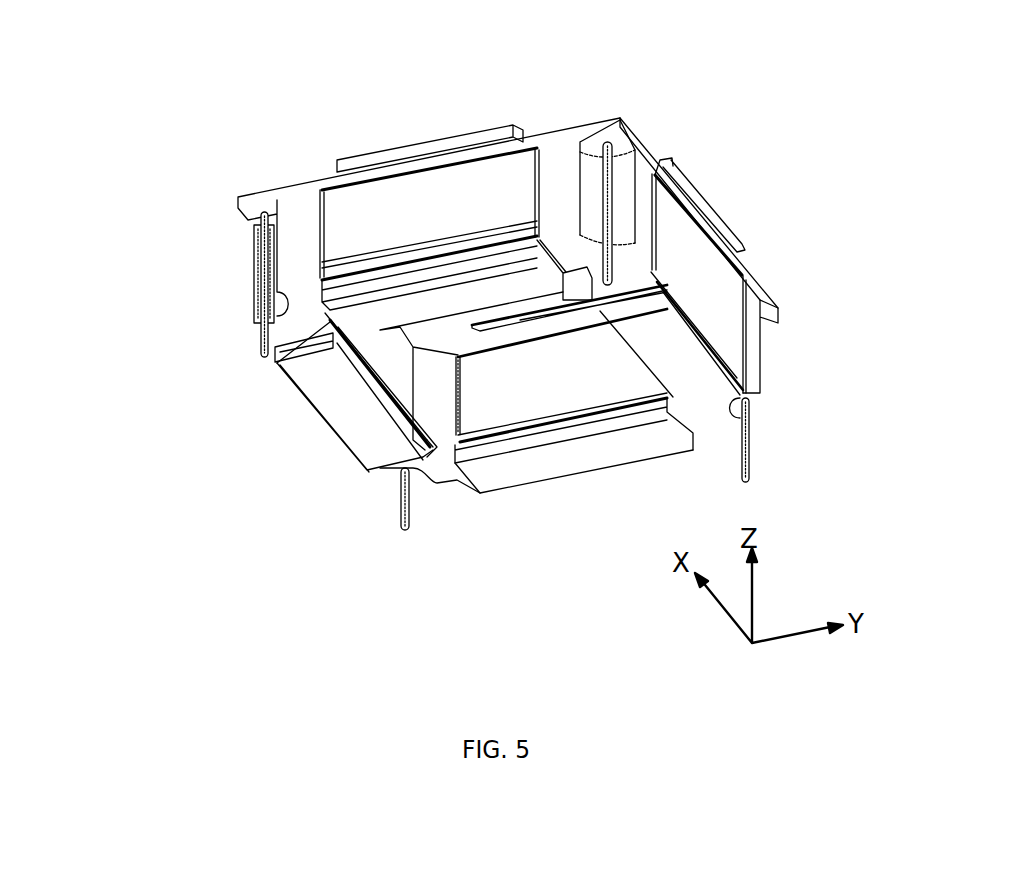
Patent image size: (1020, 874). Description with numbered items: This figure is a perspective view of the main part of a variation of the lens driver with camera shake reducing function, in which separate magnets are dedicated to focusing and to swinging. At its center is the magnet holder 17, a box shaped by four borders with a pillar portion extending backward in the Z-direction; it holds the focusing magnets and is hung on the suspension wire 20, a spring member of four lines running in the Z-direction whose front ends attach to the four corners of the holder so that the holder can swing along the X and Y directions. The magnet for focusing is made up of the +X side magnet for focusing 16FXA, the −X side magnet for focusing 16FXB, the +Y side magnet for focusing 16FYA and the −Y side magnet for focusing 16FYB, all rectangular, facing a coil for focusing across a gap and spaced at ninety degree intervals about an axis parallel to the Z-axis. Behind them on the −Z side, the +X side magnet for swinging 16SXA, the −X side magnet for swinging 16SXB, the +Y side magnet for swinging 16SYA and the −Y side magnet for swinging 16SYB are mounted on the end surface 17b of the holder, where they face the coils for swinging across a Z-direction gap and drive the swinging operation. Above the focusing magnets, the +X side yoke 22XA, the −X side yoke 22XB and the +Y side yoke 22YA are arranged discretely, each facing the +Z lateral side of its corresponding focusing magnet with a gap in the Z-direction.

The magnet holder 17 is at (298, 210).
The end surface on −Z side of the magnet holder 17b is at (300, 372).
The suspension wire 20 is at (257, 282).
The +X side yoke 22XA is at (407, 150).
The +Y side yoke 22YA is at (758, 178).
The −X side yoke 22XB is at (570, 323).
The +X side magnet for focusing 16FXA is at (497, 178).
The −X side magnet for focusing 16FXB is at (523, 397).
The +Y side magnet for focusing 16FYA is at (710, 290).
The −Y side magnet for focusing 16FYB is at (385, 407).
The +X side magnet for swinging 16SXA is at (533, 278).
The −X side magnet for swinging 16SXB is at (527, 467).
The +Y side magnet for swinging 16SYA is at (757, 397).
The −Y side magnet for swinging 16SYB is at (367, 455).